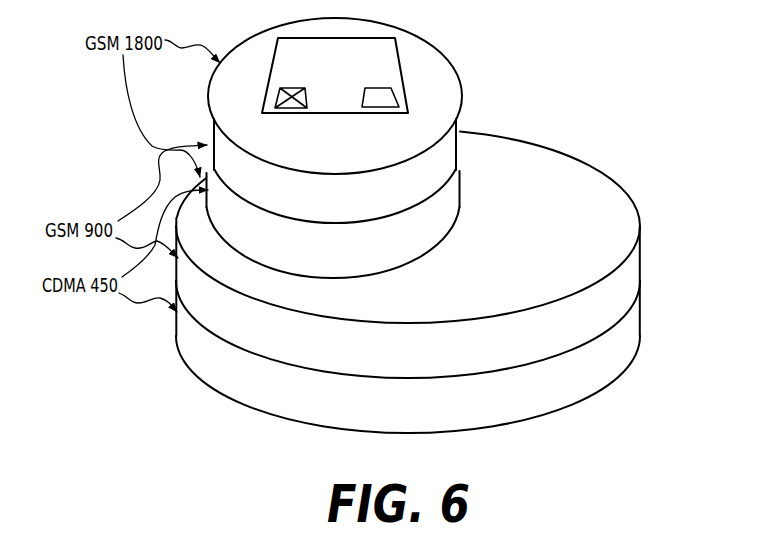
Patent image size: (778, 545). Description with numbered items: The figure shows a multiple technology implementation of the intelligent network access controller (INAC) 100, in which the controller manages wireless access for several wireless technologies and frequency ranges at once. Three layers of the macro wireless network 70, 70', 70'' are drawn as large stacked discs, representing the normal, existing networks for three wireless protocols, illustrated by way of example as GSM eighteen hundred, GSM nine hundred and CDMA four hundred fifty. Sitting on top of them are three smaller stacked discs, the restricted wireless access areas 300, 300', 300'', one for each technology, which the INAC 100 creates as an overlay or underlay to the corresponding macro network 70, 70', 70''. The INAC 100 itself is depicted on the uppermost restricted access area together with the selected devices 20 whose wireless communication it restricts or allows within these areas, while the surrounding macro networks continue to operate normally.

The macro wireless network 70 is at (409, 222).
The macro wireless network 70' is at (424, 293).
The macro wireless network 70'' is at (426, 353).
The restricted wireless access area 300 is at (370, 96).
The restricted wireless access area 300' is at (371, 171).
The restricted wireless access area 300'' is at (369, 224).
The intelligent network access controller 100 is at (365, 68).
The selected devices 20 is at (274, 92).